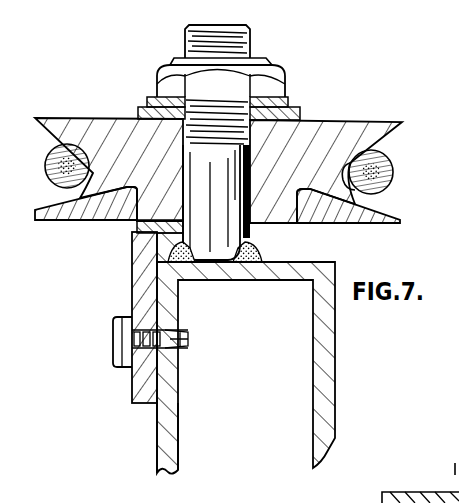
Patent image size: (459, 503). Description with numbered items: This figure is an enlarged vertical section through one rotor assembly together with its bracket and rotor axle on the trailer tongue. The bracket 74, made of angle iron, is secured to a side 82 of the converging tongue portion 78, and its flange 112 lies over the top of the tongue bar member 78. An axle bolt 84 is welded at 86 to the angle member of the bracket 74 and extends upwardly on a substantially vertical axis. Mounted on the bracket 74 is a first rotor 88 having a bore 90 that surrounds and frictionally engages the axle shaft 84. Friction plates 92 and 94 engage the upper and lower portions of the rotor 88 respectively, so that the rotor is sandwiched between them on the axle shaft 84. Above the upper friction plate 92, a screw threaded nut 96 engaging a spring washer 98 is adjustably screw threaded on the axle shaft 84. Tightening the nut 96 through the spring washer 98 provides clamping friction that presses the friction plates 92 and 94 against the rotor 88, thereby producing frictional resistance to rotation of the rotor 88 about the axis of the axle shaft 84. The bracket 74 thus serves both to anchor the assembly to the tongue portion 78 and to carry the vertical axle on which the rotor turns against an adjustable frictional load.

The bracket 74 is at (142, 270).
The converging tongue portion 78 is at (327, 375).
The side of the tongue portion 82 is at (155, 432).
The axle bolt 84 is at (188, 40).
The weld 86 is at (305, 250).
The first rotor 88 is at (373, 122).
The bore 90 is at (298, 133).
The friction plate 92 is at (138, 111).
The friction plate 94 is at (133, 233).
The screw threaded nut 96 is at (275, 75).
The spring washer 98 is at (280, 101).
The flange 112 is at (305, 243).